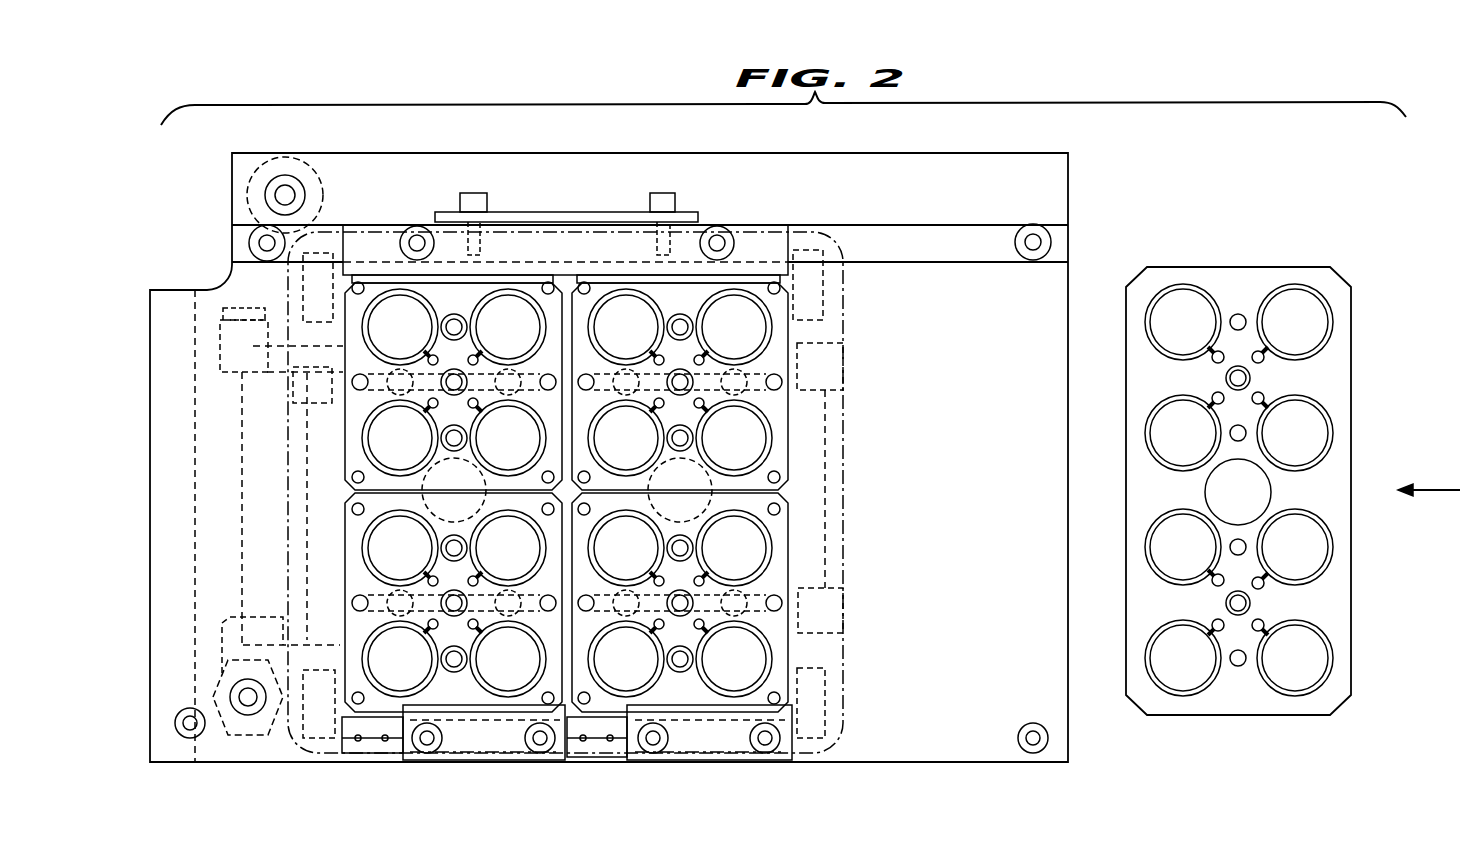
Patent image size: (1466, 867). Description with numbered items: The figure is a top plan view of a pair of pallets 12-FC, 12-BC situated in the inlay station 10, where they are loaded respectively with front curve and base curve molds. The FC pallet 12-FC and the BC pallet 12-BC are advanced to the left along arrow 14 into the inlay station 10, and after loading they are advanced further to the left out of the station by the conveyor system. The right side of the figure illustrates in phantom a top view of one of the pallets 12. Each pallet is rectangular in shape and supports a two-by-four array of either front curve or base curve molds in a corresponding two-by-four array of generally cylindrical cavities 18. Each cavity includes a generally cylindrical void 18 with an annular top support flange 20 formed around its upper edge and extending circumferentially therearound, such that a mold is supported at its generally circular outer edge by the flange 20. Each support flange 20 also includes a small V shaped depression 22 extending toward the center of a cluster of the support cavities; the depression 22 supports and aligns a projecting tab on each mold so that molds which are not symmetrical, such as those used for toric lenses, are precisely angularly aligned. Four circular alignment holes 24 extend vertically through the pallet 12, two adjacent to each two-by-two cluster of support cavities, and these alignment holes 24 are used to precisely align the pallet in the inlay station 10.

The inlay station 10 is at (609, 501).
The FC pallet 12-FC is at (484, 713).
The BC pallet 12-BC is at (710, 713).
The pallet 12 is at (1352, 430).
The arrow 14 is at (1434, 488).
The cylindrical cavity 18 is at (1288, 678).
The top support flange 20 is at (1316, 693).
The V shaped depression 22 is at (1263, 620).
The alignment hole 24 is at (1247, 658).